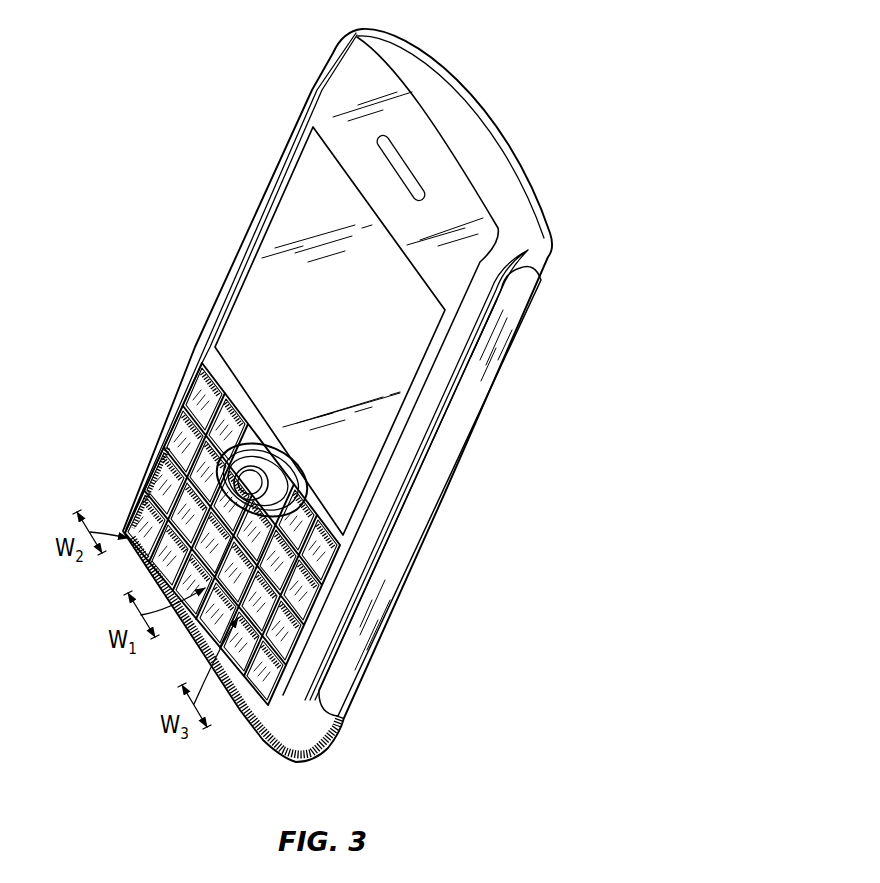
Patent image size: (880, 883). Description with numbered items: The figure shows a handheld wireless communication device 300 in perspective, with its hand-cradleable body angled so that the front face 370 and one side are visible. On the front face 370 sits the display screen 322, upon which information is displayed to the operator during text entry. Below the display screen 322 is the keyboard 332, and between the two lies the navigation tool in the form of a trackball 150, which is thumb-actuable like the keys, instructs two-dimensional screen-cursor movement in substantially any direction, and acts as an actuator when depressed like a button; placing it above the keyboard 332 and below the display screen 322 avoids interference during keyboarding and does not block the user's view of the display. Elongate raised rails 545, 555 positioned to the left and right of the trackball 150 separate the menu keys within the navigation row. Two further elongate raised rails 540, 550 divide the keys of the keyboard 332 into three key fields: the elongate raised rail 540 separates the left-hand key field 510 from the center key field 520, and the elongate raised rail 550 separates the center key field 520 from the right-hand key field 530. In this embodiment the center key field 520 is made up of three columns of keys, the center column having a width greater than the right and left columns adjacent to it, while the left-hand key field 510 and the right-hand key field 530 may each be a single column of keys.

The handheld wireless communication device 300 is at (549, 80).
The front face 370 is at (460, 196).
The display screen 322 is at (338, 377).
The elongate raised rail 540 is at (150, 465).
The keyboard 332 is at (338, 707).
The elongate raised rail 545 is at (212, 418).
The left-hand key field 510 is at (177, 532).
The center key field 520 is at (178, 605).
The right-hand key field 530 is at (248, 708).
The elongate raised rail 555 is at (342, 552).
The elongate raised rail 550 is at (320, 637).
The trackball 150 is at (252, 485).